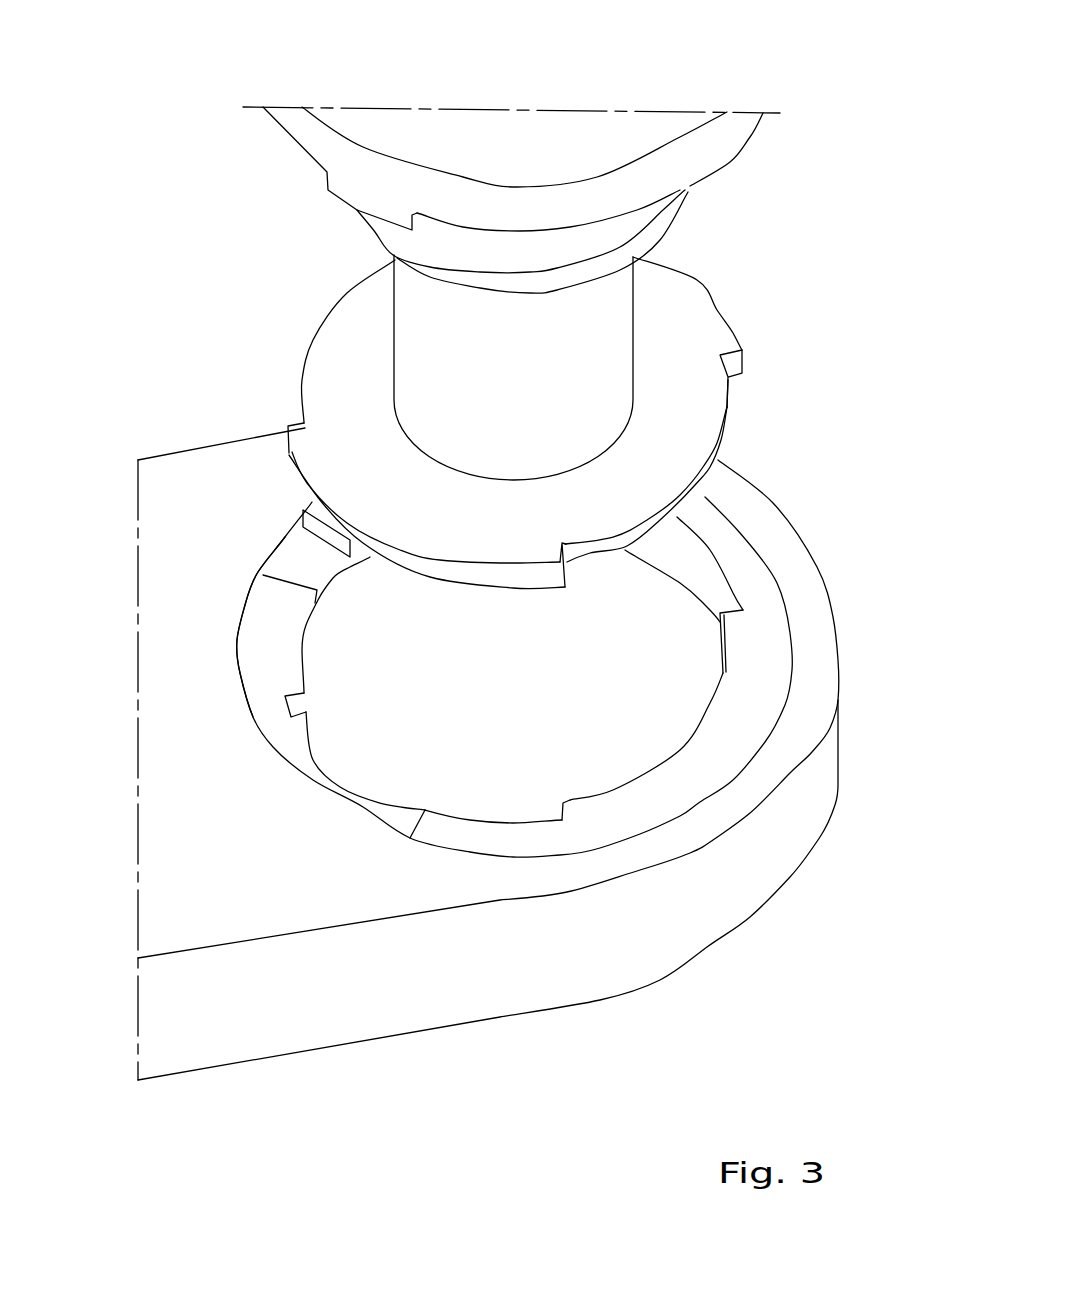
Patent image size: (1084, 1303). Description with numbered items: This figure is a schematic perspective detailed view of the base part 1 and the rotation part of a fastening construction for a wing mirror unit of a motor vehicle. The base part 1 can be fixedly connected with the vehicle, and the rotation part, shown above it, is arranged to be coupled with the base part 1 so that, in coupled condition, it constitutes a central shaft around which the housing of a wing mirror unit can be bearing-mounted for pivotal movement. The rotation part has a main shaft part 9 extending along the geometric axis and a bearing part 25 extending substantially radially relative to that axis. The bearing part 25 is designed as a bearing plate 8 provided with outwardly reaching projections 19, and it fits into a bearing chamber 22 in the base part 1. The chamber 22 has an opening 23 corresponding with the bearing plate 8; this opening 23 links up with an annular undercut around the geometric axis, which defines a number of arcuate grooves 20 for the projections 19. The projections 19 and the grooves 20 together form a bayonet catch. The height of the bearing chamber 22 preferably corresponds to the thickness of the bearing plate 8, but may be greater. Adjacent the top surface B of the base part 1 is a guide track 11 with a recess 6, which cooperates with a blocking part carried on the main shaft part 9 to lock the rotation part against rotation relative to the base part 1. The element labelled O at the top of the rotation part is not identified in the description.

The optical element / lens holder O is at (737, 155).
The main shaft part 9 is at (608, 320).
The projections 19 is at (713, 313).
The bearing plate 8 is at (690, 367).
The bearing part 25 is at (735, 398).
The recess 6 is at (307, 565).
The top surface B is at (260, 637).
The guide track 11 is at (285, 737).
The bearing chamber 22 is at (532, 700).
The arcuate grooves 20 is at (528, 822).
The opening 23 is at (663, 618).
The base part 1 is at (502, 973).